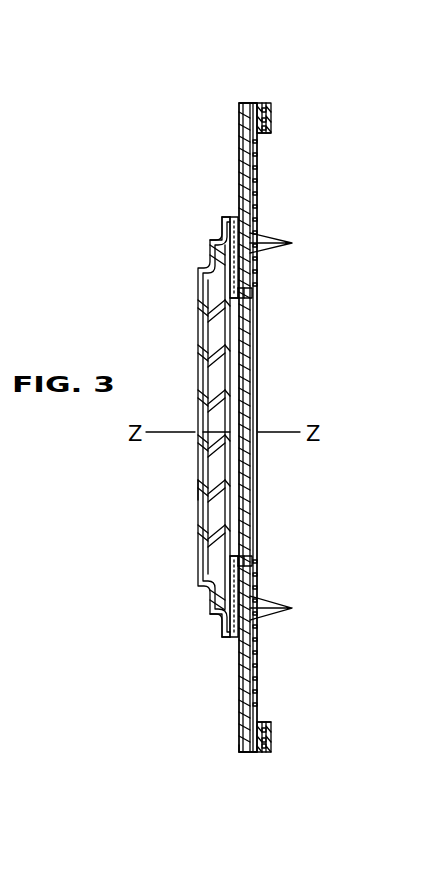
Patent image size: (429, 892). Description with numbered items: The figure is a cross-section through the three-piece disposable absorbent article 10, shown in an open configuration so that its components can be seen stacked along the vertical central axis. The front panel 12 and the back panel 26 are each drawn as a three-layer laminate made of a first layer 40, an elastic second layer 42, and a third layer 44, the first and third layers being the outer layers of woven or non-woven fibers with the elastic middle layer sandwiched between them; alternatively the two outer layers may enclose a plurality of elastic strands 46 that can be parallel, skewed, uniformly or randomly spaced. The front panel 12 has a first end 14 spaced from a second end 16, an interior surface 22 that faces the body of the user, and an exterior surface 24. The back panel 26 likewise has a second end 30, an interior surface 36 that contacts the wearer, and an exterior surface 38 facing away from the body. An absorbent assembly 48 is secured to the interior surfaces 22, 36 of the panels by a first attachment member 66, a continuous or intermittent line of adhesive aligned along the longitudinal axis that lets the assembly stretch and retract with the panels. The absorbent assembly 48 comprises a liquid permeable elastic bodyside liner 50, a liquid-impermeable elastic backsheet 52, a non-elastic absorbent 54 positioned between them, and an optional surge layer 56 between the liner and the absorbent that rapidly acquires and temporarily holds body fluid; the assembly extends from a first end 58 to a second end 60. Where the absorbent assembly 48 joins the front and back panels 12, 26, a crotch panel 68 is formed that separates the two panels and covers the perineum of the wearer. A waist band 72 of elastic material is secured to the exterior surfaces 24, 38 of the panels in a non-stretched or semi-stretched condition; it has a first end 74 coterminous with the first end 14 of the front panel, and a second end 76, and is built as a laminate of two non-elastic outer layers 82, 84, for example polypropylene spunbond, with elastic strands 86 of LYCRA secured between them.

The three-piece disposable absorbent article 10 is at (366, 96).
The front panel 12 is at (258, 652).
The first end 14 is at (239, 753).
The second end 16 is at (252, 556).
The interior surface 22 is at (239, 699).
The exterior surface 24 is at (258, 681).
The back panel 26 is at (262, 205).
The second end 30 is at (248, 301).
The interior surface 36 is at (239, 158).
The exterior surface 38 is at (259, 178).
The first layer 40 is at (243, 300).
The second layer 42 is at (246, 302).
The third layer 44 is at (255, 290).
The elastic strands 46 is at (283, 426).
The absorbent assembly 48 is at (192, 456).
The bodyside liner 50 is at (204, 383).
The backsheet 52 is at (233, 413).
The absorbent 54 is at (220, 258).
The surge layer 56 is at (203, 340).
The first end 58 is at (216, 210).
The second end 60 is at (223, 637).
The first attachment member 66 is at (237, 218).
The crotch panel 68 is at (169, 492).
The waist band 72 is at (280, 128).
The first end 74 is at (272, 108).
The second end 76 is at (266, 135).
The outer layer 82 is at (260, 103).
The outer layer 84 is at (273, 114).
The elastic strands 86 is at (268, 105).